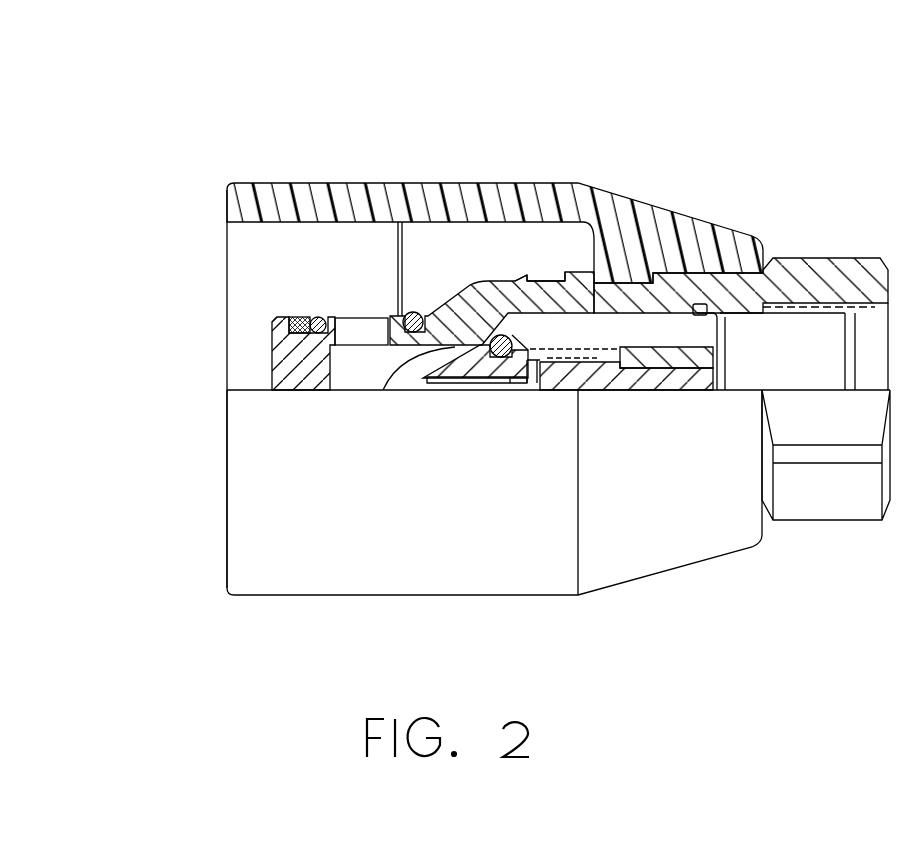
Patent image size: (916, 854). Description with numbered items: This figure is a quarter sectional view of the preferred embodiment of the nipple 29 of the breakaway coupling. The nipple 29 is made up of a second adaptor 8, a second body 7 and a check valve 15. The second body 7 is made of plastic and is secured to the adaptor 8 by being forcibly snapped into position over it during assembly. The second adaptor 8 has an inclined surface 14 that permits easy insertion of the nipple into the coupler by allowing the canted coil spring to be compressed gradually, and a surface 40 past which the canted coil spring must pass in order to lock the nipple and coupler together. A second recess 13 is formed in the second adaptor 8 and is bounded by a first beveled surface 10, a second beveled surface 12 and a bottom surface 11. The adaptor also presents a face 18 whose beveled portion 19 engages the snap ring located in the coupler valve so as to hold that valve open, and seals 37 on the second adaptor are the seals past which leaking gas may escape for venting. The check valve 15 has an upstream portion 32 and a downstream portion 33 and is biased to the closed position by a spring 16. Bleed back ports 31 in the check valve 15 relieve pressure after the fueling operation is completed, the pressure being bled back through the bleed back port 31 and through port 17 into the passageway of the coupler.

The second body 7 is at (280, 207).
The second adaptor 8 is at (787, 278).
The first beveled surface 10 is at (527, 283).
The bottom surface 11 is at (561, 271).
The second beveled surface 12 is at (577, 270).
The second recess 13 is at (545, 250).
The inclined surface 14 is at (478, 275).
The check valve 15 is at (488, 340).
The spring 16 is at (573, 357).
The port 17 is at (355, 333).
The face 18 is at (272, 360).
The beveled edge 19 is at (273, 318).
The nipple 29 is at (621, 603).
The bleed back ports 31 is at (537, 385).
The upstream portion of the check valve 32 is at (383, 390).
The downstream portion of the check valve 33 is at (610, 362).
The seals 37 is at (293, 317).
The surface 40 is at (515, 278).